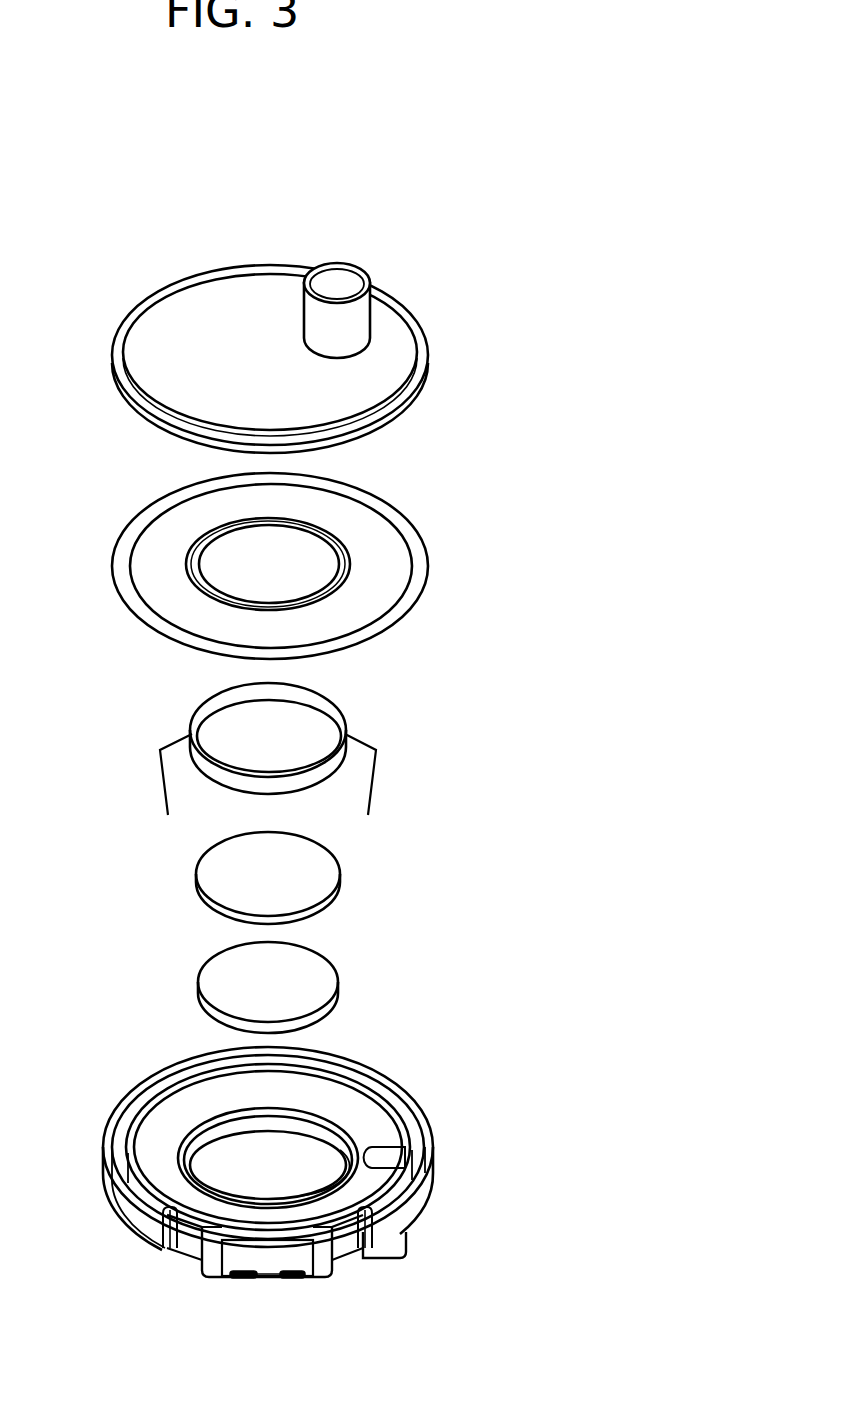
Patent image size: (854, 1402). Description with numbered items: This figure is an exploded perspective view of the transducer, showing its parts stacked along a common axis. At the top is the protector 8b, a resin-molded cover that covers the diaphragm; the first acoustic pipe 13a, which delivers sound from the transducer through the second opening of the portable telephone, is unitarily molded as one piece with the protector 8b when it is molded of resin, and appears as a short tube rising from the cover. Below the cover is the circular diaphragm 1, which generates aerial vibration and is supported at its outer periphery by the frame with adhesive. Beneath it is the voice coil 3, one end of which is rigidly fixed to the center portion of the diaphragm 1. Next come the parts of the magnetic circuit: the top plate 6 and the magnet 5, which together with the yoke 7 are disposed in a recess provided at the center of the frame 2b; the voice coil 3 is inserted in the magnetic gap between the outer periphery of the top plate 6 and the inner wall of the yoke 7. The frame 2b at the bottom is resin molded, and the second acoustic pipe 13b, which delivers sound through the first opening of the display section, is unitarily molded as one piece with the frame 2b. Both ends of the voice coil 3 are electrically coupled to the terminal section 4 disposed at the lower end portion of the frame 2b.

The protector 8b is at (183, 347).
The first acoustic pipe 13a is at (355, 323).
The diaphragm 1 is at (382, 557).
The voice coil 3 is at (343, 723).
The top plate 6 is at (308, 868).
The magnet 5 is at (315, 972).
The frame 2b is at (382, 1088).
The yoke 7 is at (308, 1158).
The second acoustic pipe 13b is at (405, 1238).
The terminal section 4 is at (300, 1278).